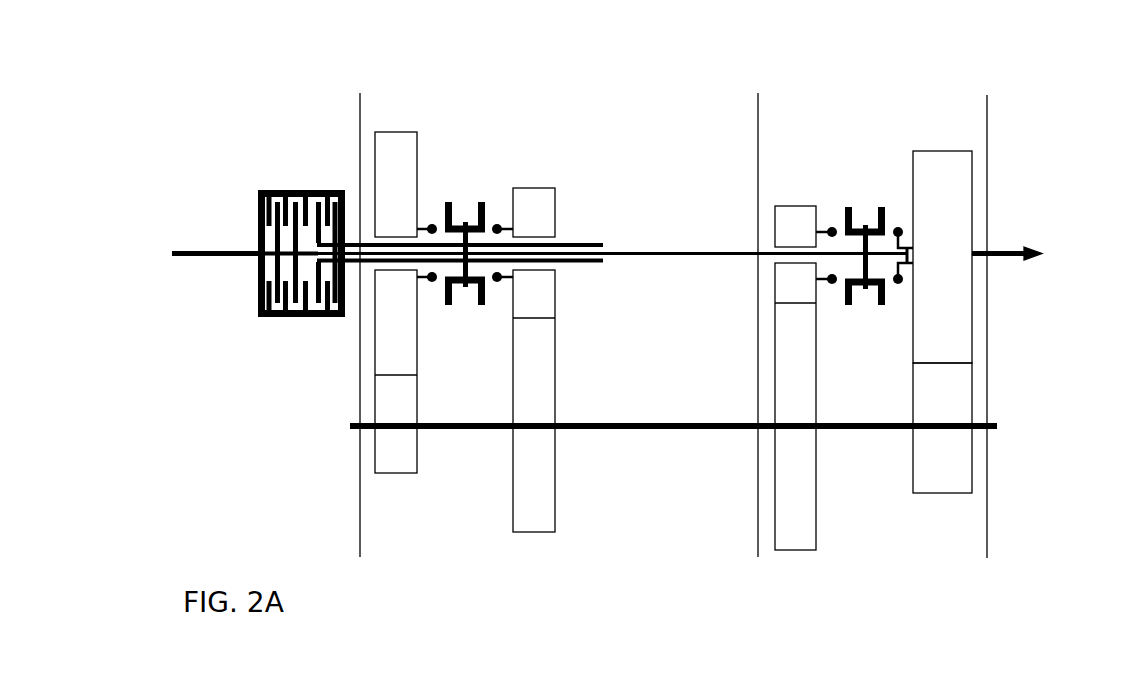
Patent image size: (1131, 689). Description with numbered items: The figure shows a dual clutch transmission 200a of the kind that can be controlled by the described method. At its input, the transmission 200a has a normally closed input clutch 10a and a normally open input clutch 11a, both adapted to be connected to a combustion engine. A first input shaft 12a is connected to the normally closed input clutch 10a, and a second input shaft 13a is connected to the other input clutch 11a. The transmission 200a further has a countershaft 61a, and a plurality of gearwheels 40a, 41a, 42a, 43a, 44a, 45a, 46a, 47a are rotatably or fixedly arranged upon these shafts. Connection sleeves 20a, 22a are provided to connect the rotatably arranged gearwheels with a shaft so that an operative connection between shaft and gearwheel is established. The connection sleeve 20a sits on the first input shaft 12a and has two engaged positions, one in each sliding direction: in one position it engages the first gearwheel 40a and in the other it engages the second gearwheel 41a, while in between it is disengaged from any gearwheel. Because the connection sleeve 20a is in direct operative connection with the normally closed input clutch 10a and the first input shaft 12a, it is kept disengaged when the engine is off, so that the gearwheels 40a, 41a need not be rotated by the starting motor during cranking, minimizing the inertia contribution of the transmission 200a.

The dual clutch transmission 200a is at (1031, 87).
The normally closed input clutch 10a is at (320, 190).
The normally open input clutch 11a is at (285, 190).
The first input shaft 12a is at (580, 243).
The second input shaft 13a is at (643, 253).
The connection sleeve 20a is at (463, 222).
The connection sleeve 22a is at (857, 230).
The first gearwheel 40a is at (398, 130).
The second gearwheel 41a is at (533, 188).
The gearwheel 42a is at (798, 550).
The gearwheel 43a is at (932, 493).
The gearwheel 44a is at (935, 151).
The gearwheel 45a is at (525, 533).
The gearwheel 46a is at (385, 473).
The gearwheel 47a is at (785, 206).
The countershaft 61a is at (633, 430).